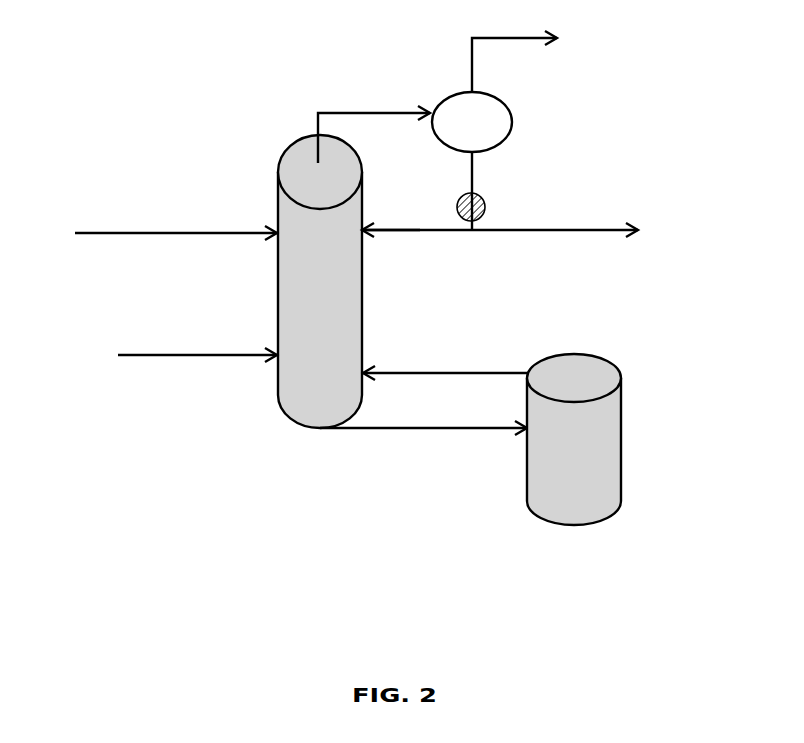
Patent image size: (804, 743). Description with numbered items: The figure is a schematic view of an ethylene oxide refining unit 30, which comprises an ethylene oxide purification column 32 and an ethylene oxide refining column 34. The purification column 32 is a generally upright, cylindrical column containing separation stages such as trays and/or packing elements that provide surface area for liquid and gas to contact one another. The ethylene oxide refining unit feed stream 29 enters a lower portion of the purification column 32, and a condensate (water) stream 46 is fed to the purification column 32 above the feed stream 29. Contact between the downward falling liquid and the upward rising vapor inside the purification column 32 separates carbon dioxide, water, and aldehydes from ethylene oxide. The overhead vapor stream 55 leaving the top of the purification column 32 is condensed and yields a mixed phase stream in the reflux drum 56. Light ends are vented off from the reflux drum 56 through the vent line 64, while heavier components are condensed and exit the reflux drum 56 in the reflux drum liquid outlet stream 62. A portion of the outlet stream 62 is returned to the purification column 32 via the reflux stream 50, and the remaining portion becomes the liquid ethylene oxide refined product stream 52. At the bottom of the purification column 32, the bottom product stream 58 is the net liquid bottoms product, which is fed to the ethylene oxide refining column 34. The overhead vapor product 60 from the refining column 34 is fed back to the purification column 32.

The ethylene oxide refining unit 30 is at (97, 98).
The ethylene oxide purification column 32 is at (333, 272).
The ethylene oxide refining column 34 is at (578, 472).
The condensate (water) stream 46 is at (153, 235).
The ethylene oxide refining unit feed stream 29 is at (175, 353).
The reflux stream 50 is at (400, 233).
The liquid ethylene oxide refined product stream 52 is at (521, 233).
The overhead vapor stream 55 is at (374, 127).
The reflux drum 56 is at (513, 117).
The bottom product stream 58 is at (383, 432).
The overhead vapor product 60 is at (405, 371).
The reflux drum liquid outlet stream 62 is at (487, 183).
The vent line 64 is at (541, 61).